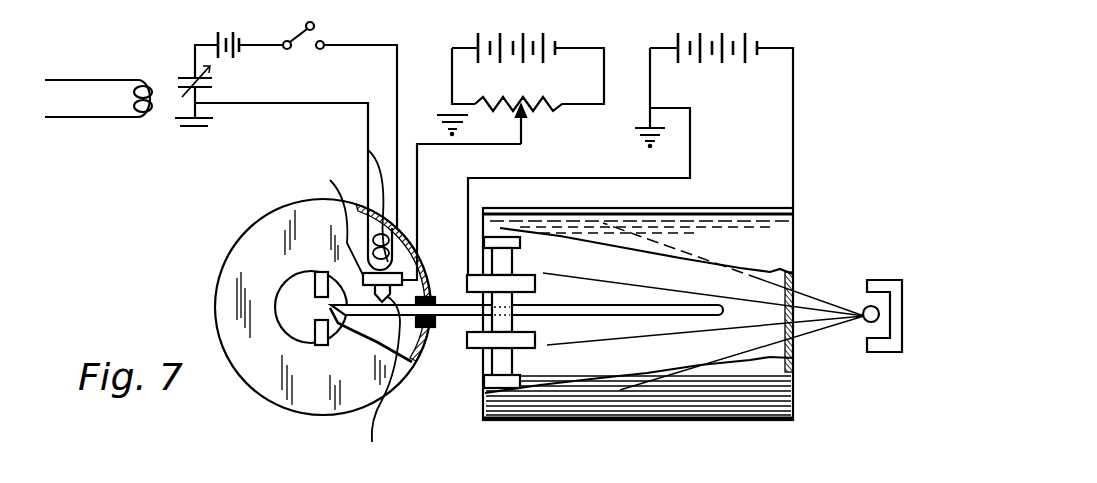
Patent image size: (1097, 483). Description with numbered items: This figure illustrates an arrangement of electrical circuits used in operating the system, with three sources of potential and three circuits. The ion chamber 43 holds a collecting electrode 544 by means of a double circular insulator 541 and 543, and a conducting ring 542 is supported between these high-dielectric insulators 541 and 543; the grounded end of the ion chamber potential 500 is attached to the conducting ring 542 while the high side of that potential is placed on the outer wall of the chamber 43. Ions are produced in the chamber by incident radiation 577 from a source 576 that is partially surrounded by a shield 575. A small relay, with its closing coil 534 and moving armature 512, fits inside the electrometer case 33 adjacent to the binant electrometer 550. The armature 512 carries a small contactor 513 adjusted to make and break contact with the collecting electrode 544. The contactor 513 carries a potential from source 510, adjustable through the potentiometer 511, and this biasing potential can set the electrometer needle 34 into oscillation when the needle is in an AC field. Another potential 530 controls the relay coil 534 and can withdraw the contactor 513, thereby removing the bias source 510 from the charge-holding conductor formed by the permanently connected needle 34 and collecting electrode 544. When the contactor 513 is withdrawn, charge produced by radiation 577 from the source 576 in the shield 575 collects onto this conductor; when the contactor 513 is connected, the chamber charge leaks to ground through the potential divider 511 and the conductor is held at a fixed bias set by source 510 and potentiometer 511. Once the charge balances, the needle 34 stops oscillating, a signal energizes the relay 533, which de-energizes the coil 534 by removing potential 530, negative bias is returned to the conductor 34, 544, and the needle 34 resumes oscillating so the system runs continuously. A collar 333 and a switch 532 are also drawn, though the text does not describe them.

The electrometer case 33 is at (223, 272).
The electrometer needle 34 is at (338, 327).
The ion chamber 43 is at (647, 415).
The collar 333 is at (434, 330).
The ion chamber potential 500 is at (703, 35).
The potential source 510 is at (508, 20).
The potentiometer 511 is at (537, 112).
The moving armature 512 is at (355, 229).
The contactor 513 is at (402, 376).
The potential 530 is at (215, 40).
The switch 532 is at (314, 32).
The relay 533 is at (165, 90).
The closing coil 534 is at (380, 190).
The insulator 541 is at (508, 257).
The conducting ring 542 is at (534, 286).
The insulator 543 is at (510, 322).
The collecting electrode 544 is at (602, 312).
The binant electrometer 550 is at (290, 287).
The shield 575 is at (893, 282).
The source 576 is at (868, 324).
The incident radiation 577 is at (808, 306).